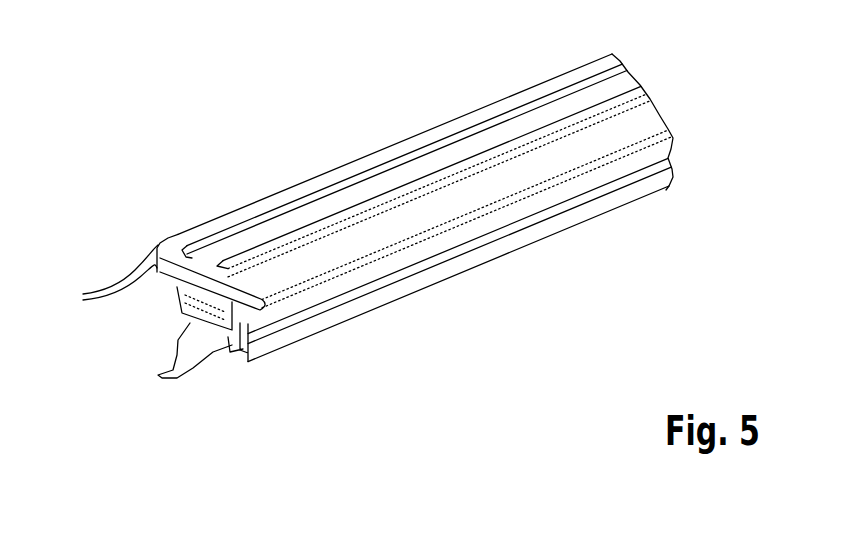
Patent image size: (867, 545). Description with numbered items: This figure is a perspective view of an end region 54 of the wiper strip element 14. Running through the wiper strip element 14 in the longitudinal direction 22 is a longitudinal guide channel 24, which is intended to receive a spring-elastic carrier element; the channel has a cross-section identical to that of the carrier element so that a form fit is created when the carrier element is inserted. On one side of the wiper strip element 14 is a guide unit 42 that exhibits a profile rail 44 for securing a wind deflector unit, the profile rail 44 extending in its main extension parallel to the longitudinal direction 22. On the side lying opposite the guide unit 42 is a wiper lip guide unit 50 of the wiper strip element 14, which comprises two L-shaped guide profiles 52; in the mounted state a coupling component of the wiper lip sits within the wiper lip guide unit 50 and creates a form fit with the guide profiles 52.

The wiper strip element 14 is at (535, 95).
The longitudinal direction 22 is at (555, 287).
The longitudinal guide channel 24 is at (158, 274).
The guide unit 42 is at (120, 233).
The profile rail 44 is at (106, 281).
The wiper lip guide unit 50 is at (217, 362).
The L-shaped guide profiles 52 is at (180, 361).
The end region 54 is at (147, 207).